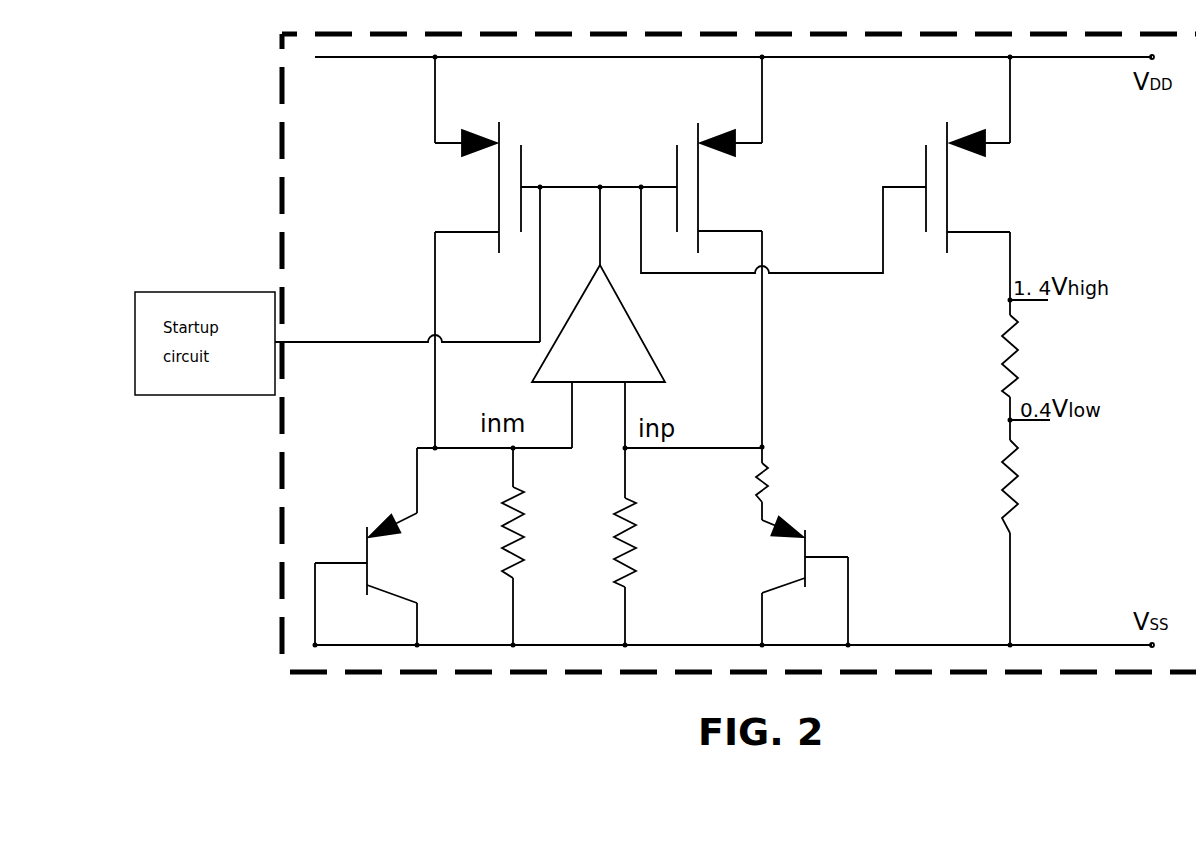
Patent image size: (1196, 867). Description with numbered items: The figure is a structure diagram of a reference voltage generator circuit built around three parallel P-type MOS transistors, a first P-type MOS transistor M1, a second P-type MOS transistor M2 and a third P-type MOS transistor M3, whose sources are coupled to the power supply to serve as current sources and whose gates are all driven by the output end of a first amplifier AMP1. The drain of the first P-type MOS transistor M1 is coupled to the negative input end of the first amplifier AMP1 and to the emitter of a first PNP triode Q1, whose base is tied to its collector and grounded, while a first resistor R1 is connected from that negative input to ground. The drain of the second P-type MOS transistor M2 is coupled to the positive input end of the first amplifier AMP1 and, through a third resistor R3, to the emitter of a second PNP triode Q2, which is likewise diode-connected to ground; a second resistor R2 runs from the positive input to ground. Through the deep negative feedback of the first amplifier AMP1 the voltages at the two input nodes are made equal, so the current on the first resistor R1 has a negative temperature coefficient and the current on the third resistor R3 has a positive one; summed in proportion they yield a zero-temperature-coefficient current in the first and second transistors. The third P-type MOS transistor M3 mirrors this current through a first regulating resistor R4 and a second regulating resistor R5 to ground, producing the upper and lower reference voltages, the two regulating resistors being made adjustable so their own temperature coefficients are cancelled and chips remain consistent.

The first P-type MOS transistor M1 is at (478, 252).
The second P-type MOS transistor M2 is at (719, 252).
The third P-type MOS transistor M3 is at (968, 186).
The first amplifier AMP1 is at (616, 356).
The first resistor R1 is at (524, 546).
The second resistor R2 is at (636, 546).
The third resistor R3 is at (775, 483).
The first regulating resistor R4 is at (996, 377).
The second regulating resistor R5 is at (996, 542).
The first PNP triode Q1 is at (366, 546).
The second PNP triode Q2 is at (805, 581).